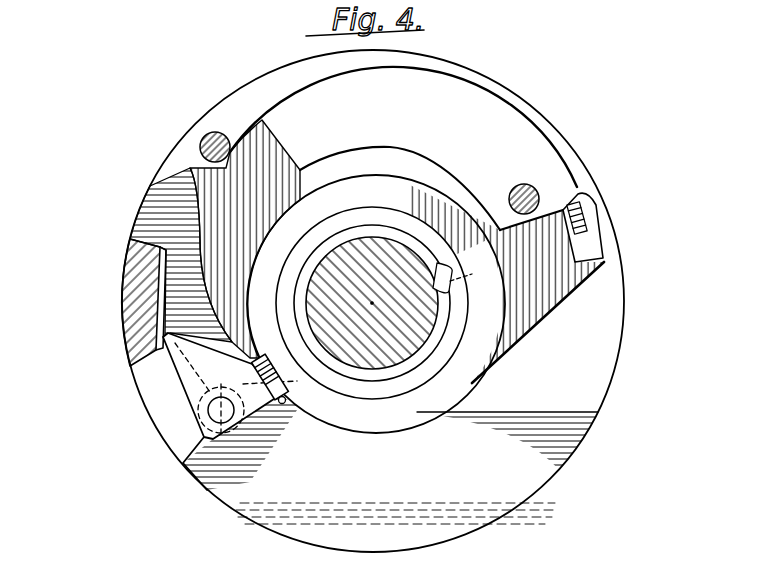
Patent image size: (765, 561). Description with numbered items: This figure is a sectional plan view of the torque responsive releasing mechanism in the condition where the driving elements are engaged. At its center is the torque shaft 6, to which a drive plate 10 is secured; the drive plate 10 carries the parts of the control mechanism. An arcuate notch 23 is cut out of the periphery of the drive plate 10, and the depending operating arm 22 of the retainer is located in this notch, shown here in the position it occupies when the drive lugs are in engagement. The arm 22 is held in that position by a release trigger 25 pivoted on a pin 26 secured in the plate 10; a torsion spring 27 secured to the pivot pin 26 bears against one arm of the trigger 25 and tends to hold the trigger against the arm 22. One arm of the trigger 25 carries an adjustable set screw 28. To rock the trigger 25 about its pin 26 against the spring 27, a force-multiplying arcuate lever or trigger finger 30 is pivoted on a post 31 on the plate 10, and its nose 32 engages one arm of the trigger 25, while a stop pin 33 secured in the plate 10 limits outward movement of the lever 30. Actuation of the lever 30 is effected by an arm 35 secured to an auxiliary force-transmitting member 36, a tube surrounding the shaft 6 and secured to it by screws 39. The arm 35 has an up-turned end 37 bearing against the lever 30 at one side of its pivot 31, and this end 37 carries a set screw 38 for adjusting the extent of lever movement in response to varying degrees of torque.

The torque shaft 6 is at (436, 313).
The drive plate 10 is at (597, 390).
The operating arm 22 is at (128, 323).
The arcuate notch 23 is at (133, 258).
The release trigger 25 is at (186, 384).
The pivot pin 26 is at (226, 418).
The torsion spring 27 is at (284, 404).
The set screw 28 is at (290, 373).
The trigger finger 30 is at (532, 137).
The post 31 is at (540, 186).
The nose 32 is at (231, 338).
The stop pin 33 is at (214, 132).
The arm 35 is at (500, 347).
The auxiliary force-transmitting member 36 is at (459, 382).
The up-turned end 37 is at (589, 241).
The set screw 38 is at (596, 203).
The screws 39 is at (452, 276).